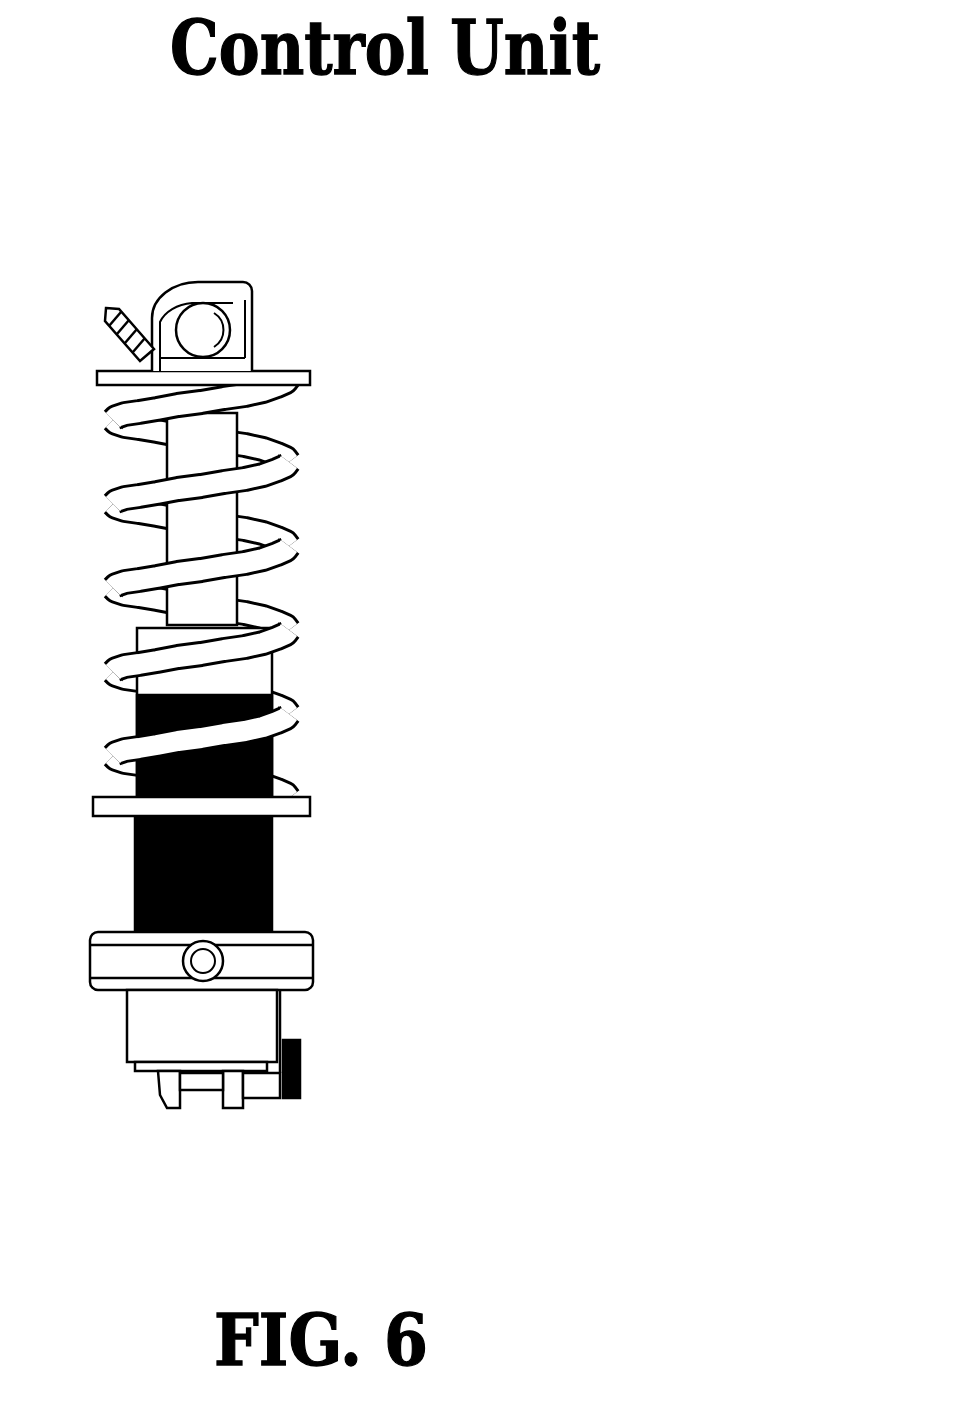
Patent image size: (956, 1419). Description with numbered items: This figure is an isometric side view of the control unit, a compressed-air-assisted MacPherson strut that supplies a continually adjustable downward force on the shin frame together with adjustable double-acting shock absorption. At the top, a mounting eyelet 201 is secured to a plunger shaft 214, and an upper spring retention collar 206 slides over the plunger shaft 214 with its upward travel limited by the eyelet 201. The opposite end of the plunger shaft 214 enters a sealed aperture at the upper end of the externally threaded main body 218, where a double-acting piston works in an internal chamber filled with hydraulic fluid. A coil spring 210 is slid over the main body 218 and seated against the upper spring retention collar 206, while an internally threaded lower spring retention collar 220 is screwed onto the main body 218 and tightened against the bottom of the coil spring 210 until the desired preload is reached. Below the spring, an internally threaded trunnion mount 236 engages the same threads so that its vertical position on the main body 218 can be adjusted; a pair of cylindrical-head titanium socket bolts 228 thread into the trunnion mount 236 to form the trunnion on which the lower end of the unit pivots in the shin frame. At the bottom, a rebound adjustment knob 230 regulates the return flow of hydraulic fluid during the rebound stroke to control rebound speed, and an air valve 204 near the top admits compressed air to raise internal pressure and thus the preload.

The mounting eyelet 201 is at (203, 328).
The air valve 204 is at (222, 298).
The upper spring retention collar 206 is at (310, 379).
The coil spring 210 is at (300, 639).
The plunger shaft 214 is at (230, 518).
The main body 218 is at (272, 861).
The lower spring retention collar 220 is at (318, 800).
The cylindrical-head titanium socket bolts 228 is at (310, 993).
The rebound adjustment knob 230 is at (300, 1077).
The trunnion mount 236 is at (313, 961).